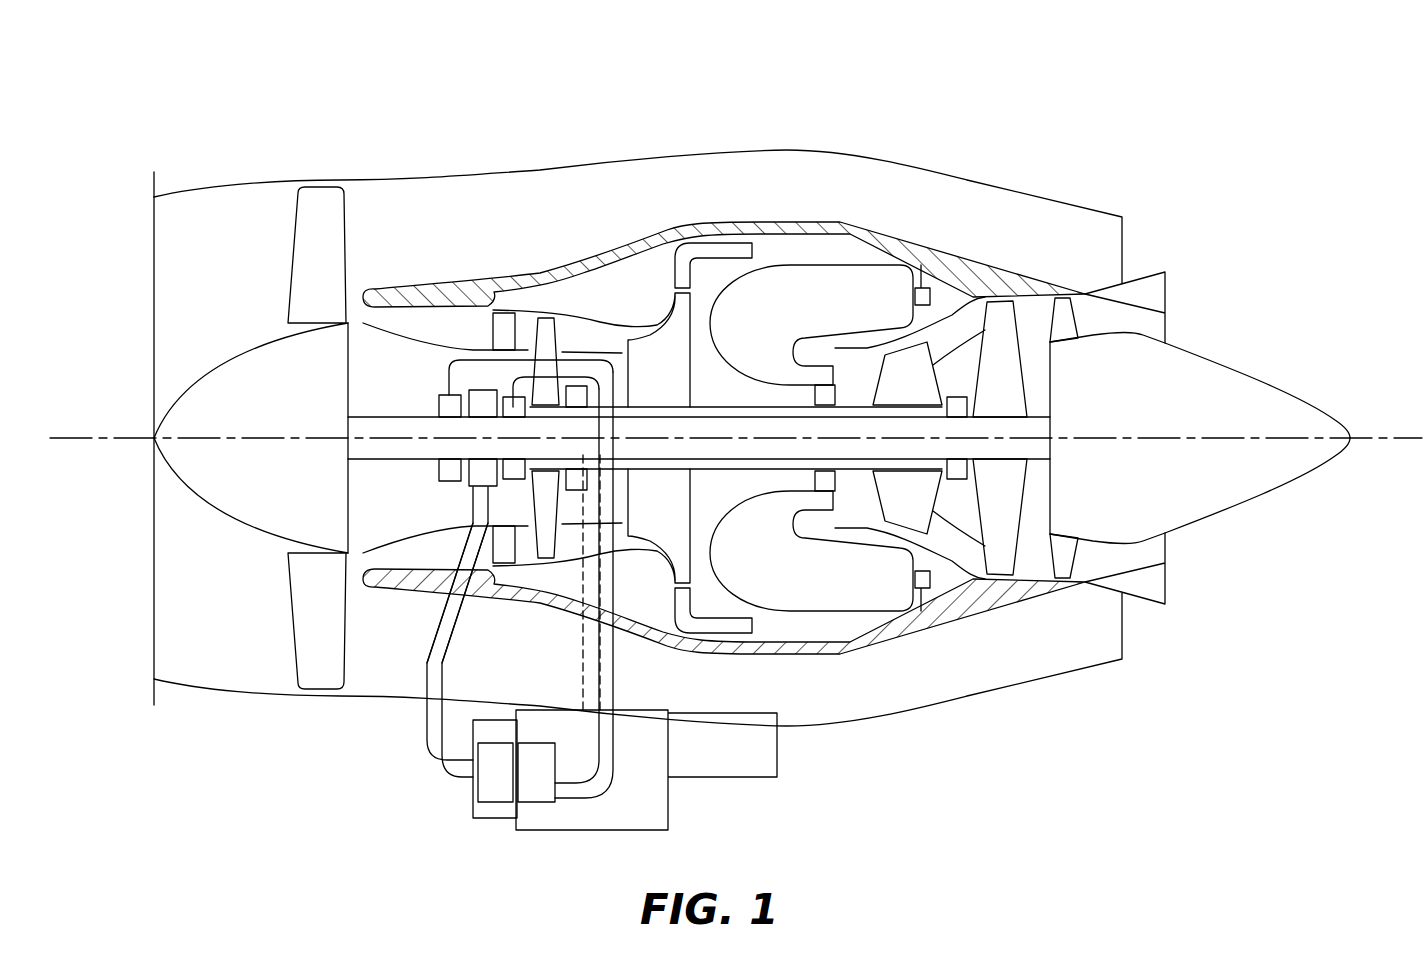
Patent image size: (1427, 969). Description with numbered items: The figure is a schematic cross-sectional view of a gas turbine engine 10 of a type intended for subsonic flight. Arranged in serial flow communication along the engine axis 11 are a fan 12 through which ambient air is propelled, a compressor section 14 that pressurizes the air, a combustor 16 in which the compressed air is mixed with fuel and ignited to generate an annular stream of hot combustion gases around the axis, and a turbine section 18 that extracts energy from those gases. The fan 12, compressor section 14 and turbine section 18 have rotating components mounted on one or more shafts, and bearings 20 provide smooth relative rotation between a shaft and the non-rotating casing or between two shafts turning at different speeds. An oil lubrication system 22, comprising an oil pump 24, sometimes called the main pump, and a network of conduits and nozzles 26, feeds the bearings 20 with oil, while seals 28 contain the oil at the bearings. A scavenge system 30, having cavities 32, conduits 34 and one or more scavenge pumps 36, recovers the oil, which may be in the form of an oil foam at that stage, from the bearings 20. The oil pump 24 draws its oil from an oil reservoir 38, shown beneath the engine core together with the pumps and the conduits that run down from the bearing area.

The gas turbine engine 10 is at (968, 108).
The engine axis 11 is at (1390, 432).
The fan 12 is at (319, 607).
The compressor section 14 is at (582, 330).
The combustor 16 is at (813, 290).
The turbine section 18 is at (960, 508).
The bearings 20 is at (480, 385).
The oil lubrication system 22 is at (423, 743).
The oil pump 24 is at (488, 790).
The network of conduits and nozzles 26 is at (420, 702).
The seals 28 is at (447, 385).
The scavenge system 30 is at (613, 727).
The cavities 32 is at (497, 348).
The conduits 34 is at (600, 795).
The scavenge pumps 36 is at (530, 795).
The oil reservoir 38 is at (487, 818).